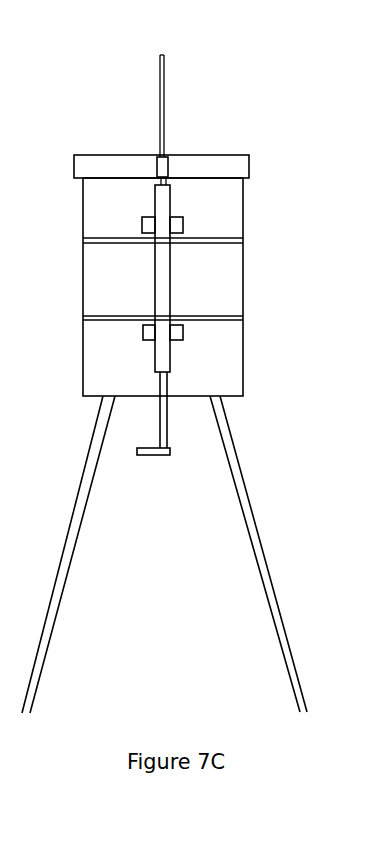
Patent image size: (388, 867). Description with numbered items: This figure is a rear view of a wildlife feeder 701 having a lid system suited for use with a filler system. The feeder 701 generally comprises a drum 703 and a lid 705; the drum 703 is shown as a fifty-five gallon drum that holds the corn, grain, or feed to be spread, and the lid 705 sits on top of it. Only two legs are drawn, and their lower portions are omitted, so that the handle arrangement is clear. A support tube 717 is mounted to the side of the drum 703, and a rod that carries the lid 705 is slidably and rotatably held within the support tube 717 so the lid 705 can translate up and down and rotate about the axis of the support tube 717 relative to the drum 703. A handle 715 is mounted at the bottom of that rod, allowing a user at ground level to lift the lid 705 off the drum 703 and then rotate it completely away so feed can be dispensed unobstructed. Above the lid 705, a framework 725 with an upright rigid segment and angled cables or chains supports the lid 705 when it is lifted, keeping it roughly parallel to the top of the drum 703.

The feeder 701 is at (197, 384).
The drum 703 is at (228, 362).
The lid 705 is at (238, 167).
The handle 715 is at (145, 455).
The support tube 717 is at (162, 270).
The framework 725 is at (163, 88).